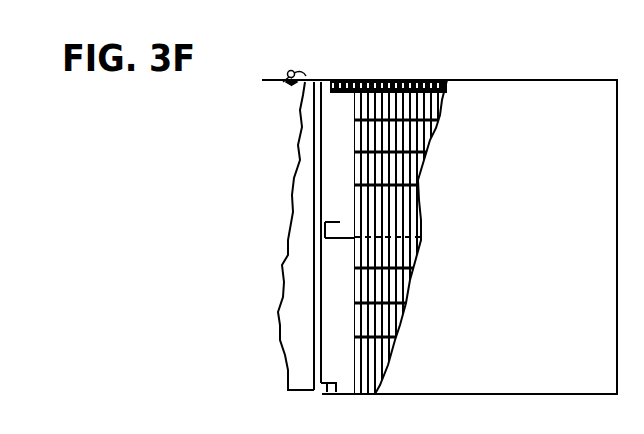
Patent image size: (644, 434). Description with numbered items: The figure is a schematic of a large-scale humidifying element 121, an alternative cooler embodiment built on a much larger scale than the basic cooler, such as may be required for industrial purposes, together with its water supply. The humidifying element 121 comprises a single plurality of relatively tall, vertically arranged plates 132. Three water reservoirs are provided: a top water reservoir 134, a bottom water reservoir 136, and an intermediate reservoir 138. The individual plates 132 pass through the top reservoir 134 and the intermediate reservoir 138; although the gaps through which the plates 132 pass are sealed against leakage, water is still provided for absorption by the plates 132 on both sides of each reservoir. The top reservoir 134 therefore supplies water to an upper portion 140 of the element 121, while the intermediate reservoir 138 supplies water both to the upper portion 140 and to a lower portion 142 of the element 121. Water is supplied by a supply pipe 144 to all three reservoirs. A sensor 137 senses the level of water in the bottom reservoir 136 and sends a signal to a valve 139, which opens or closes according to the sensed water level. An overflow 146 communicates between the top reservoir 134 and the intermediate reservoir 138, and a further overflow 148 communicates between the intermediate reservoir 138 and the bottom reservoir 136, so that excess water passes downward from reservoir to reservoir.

The large-scale humidifying element 121 is at (407, 72).
The plates 132 is at (432, 140).
The top water reservoir 134 is at (353, 80).
The bottom water reservoir 136 is at (345, 396).
The sensor 137 is at (327, 397).
The intermediate reservoir 138 is at (343, 240).
The valve 139 is at (283, 86).
The upper portion 140 is at (340, 152).
The lower portion 142 is at (336, 306).
The supply pipe 144 is at (267, 80).
The overflow 146 is at (320, 80).
The overflow 148 is at (320, 233).